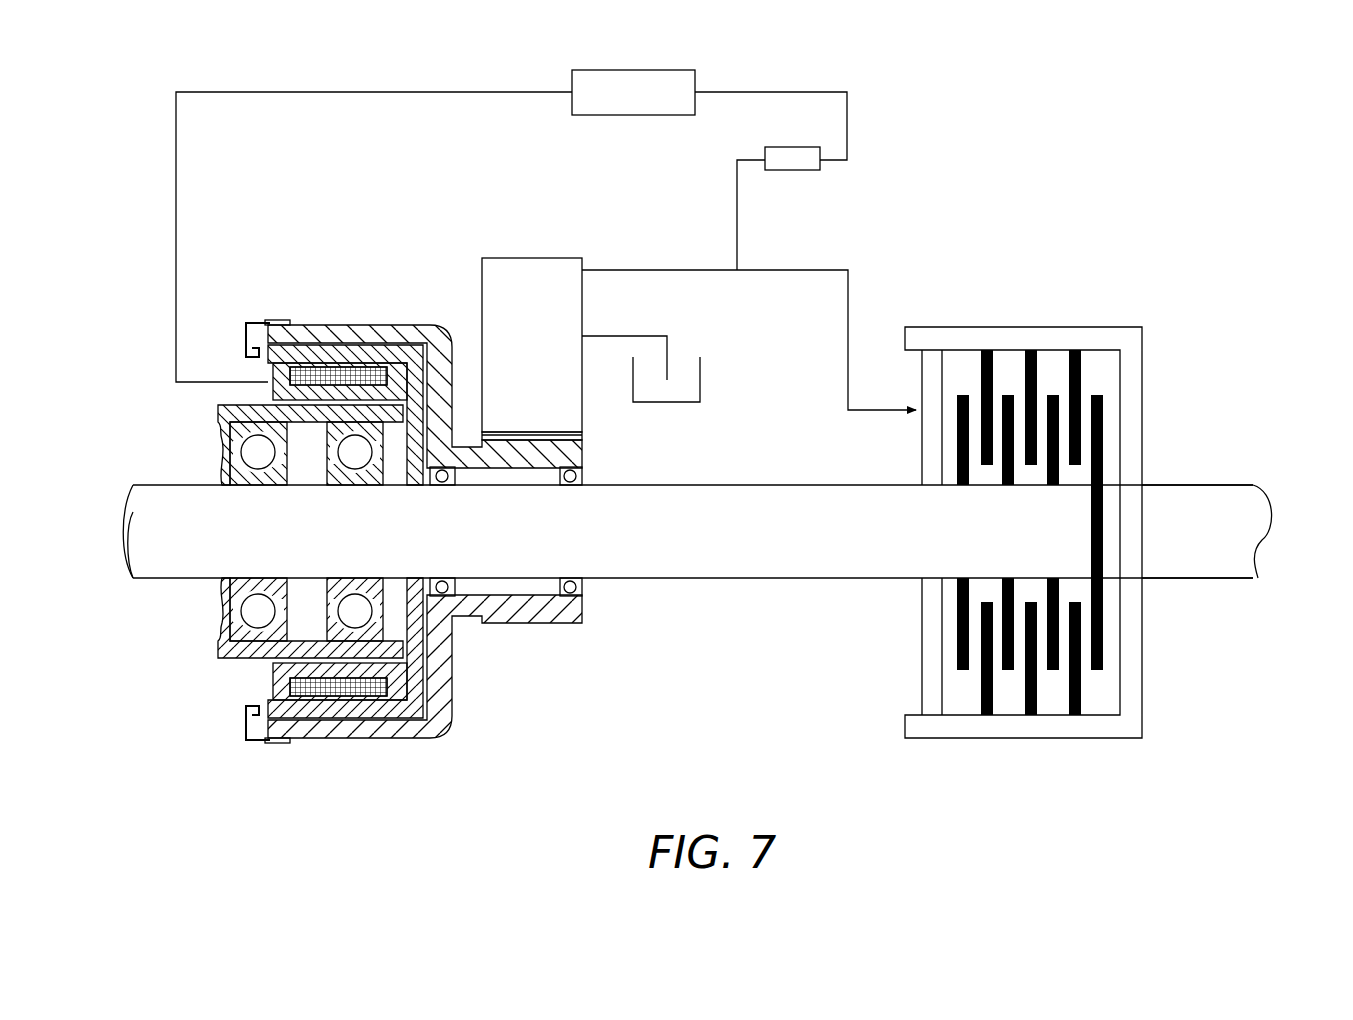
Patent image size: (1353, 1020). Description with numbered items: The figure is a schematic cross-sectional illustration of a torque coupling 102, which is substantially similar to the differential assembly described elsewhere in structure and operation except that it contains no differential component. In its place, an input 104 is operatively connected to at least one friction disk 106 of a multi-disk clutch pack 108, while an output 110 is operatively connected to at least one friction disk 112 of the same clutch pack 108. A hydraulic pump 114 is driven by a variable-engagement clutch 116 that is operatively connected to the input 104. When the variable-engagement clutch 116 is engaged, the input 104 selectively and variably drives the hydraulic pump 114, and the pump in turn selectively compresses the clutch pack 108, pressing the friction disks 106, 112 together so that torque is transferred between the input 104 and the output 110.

The torque coupling 102 is at (976, 152).
The input 104 is at (256, 546).
The friction disk 106 is at (1053, 672).
The multi-disk clutch pack 108 is at (955, 385).
The output 110 is at (1218, 497).
The friction disk 112 is at (1031, 600).
The hydraulic pump 114 is at (498, 257).
The variable-engagement clutch 116 is at (336, 318).